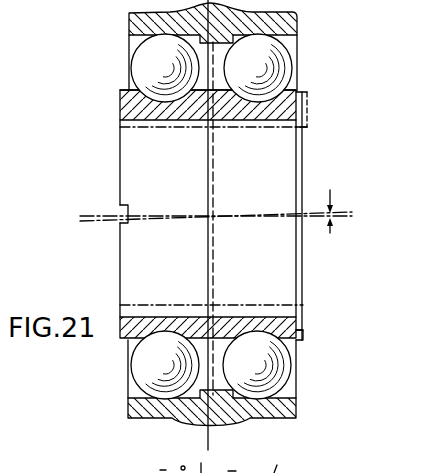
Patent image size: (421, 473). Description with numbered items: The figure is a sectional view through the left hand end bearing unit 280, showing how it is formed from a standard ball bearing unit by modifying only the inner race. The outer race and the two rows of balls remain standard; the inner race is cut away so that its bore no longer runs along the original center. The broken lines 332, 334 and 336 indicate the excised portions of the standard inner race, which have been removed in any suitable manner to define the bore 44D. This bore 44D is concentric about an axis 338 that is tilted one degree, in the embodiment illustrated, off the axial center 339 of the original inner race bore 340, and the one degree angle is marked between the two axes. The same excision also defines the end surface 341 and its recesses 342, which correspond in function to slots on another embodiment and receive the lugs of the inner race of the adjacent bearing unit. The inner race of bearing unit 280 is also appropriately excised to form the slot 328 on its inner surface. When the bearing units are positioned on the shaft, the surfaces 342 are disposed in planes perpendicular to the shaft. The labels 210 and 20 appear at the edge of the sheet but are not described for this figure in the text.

The bearing unit 280 is at (113, 411).
The original inner race bore 340 is at (273, 130).
The slot 328 is at (126, 213).
The broken line 332 is at (236, 128).
The broken line 336 is at (236, 305).
The recess 342 is at (305, 100).
The broken line 334 is at (309, 122).
The end surface 341 is at (303, 325).
The axis 338 is at (338, 204).
The axial center 339 is at (313, 218).
The bore 44D is at (159, 124).
The support 210 is at (420, 6).
The frame 20 is at (414, 45).